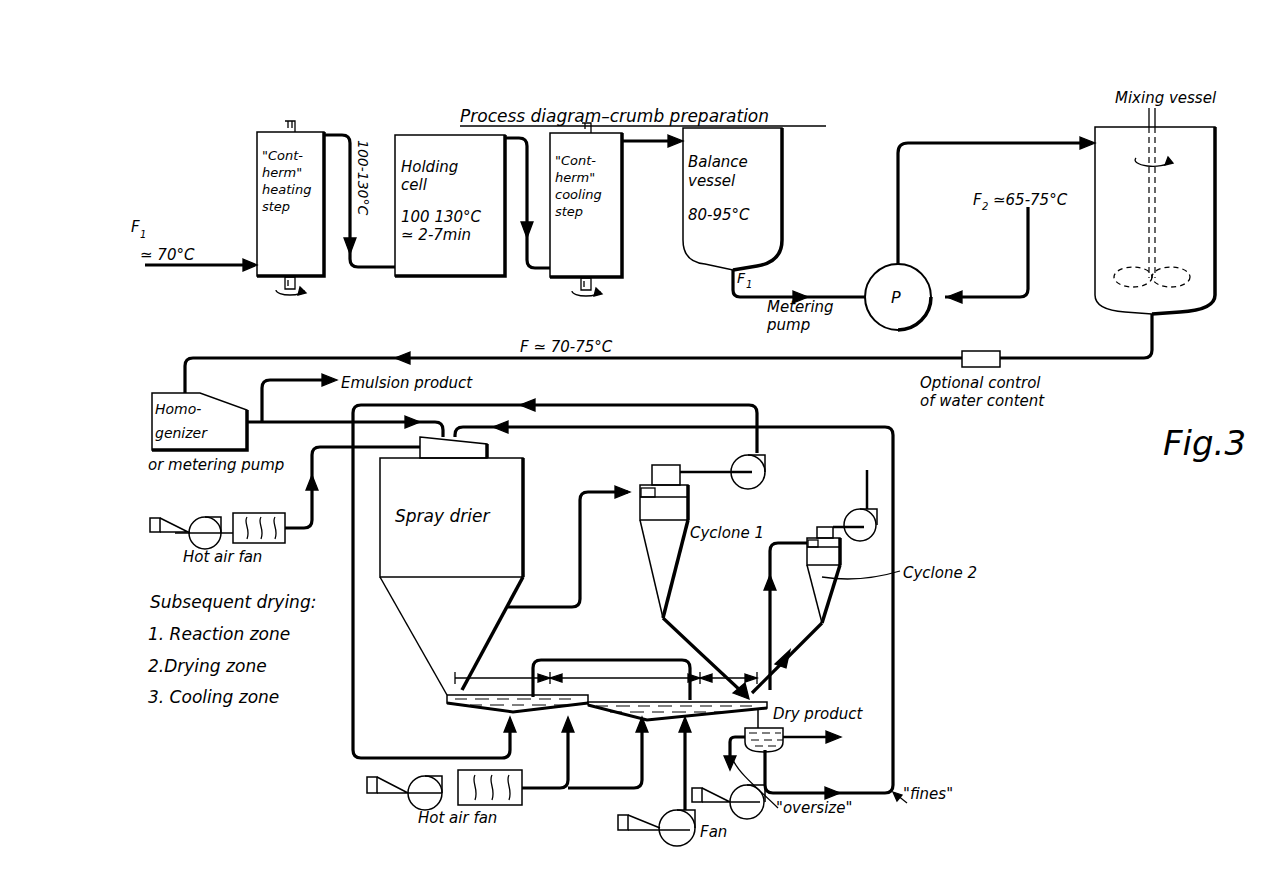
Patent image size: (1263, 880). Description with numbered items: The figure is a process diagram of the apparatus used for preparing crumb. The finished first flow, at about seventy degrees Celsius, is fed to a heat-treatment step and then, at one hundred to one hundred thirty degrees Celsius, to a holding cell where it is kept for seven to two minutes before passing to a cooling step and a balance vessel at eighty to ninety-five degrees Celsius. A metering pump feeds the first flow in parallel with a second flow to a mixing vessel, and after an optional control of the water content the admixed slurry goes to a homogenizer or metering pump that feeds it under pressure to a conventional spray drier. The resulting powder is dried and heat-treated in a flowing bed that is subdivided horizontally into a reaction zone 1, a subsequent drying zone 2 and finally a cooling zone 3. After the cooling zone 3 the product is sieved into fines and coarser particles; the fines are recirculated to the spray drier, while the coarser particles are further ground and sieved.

The reaction zone 1 is at (517, 685).
The drying zone 2 is at (650, 689).
The cooling zone 3 is at (723, 690).